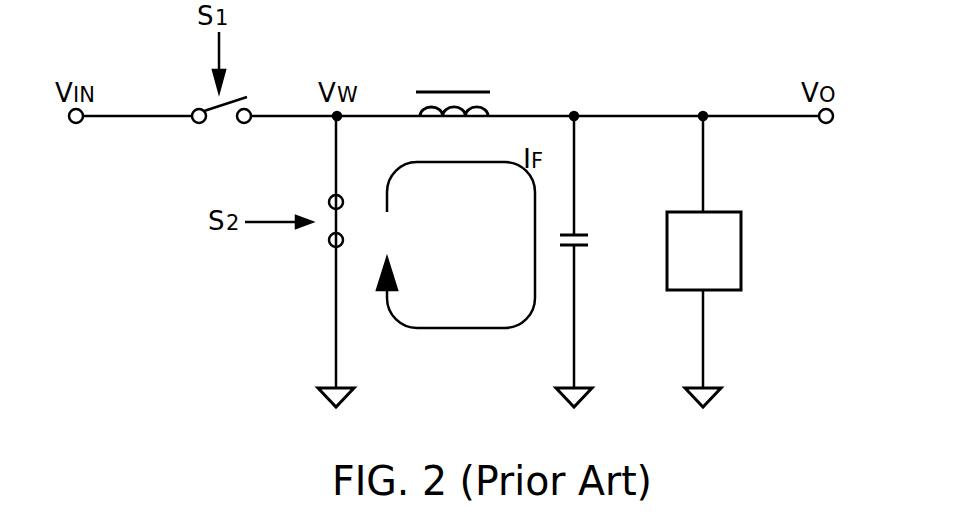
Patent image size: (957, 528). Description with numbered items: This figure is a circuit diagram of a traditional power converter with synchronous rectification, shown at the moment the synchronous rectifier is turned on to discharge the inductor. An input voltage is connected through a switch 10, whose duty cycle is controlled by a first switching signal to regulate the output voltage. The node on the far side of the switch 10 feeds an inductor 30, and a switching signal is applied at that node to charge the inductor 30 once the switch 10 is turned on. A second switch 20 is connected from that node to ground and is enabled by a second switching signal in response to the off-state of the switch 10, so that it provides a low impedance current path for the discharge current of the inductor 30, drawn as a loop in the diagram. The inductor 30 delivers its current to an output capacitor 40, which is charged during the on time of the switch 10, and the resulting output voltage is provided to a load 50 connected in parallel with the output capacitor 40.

The switch 10 is at (219, 103).
The switch 20 is at (330, 244).
The inductor 30 is at (484, 107).
The output capacitor 40 is at (586, 246).
The load 50 is at (742, 249).